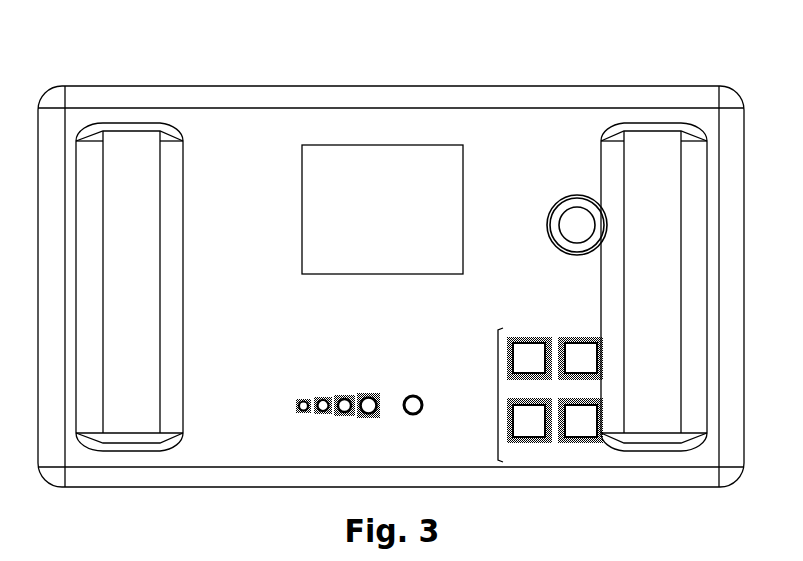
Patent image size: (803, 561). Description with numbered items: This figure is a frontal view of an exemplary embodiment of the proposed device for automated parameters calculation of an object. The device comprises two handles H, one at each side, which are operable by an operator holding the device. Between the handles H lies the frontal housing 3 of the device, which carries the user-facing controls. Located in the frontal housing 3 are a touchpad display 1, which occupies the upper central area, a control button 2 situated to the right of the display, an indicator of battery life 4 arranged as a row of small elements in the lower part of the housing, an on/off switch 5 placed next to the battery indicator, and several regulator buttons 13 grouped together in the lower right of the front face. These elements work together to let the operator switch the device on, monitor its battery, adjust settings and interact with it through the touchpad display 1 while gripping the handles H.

The touchpad display 1 is at (313, 163).
The control button 2 is at (575, 221).
The frontal housing 3 is at (391, 286).
The indicator of battery life 4 is at (343, 395).
The on/off switch 5 is at (418, 396).
The regulator buttons 13 is at (498, 398).
The handles H is at (168, 252).